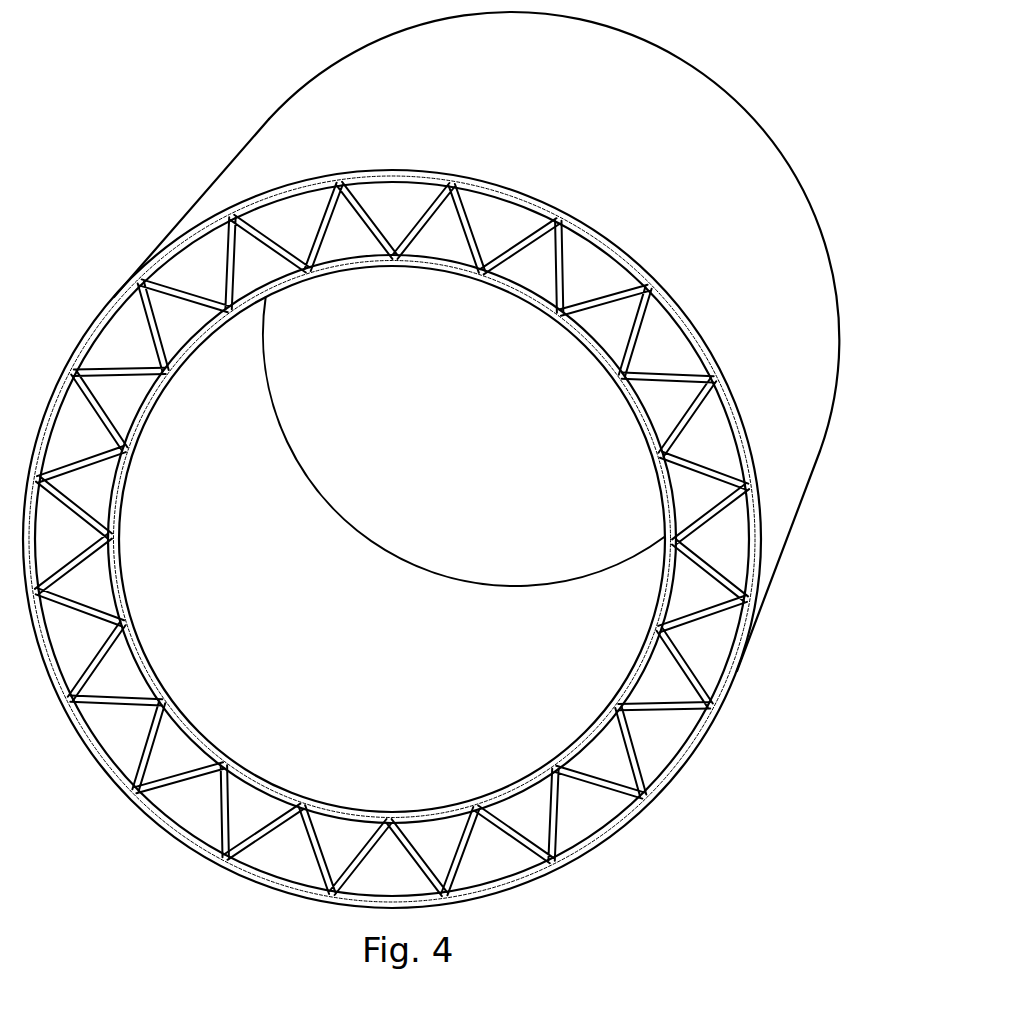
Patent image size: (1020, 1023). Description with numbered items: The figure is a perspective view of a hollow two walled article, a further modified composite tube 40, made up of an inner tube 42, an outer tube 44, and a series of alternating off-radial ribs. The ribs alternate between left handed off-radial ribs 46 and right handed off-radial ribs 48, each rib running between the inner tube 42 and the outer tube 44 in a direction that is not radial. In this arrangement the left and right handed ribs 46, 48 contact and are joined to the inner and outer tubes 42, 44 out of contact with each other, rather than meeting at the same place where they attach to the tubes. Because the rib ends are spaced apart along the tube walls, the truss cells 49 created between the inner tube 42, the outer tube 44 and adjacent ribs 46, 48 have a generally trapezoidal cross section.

The composite tube 40 is at (392, 539).
The inner tube 42 is at (190, 362).
The outer tube 44 is at (555, 125).
The left handed off-radial rib 46 is at (568, 263).
The right handed off-radial rib 48 is at (273, 820).
The truss cell 49 is at (443, 840).